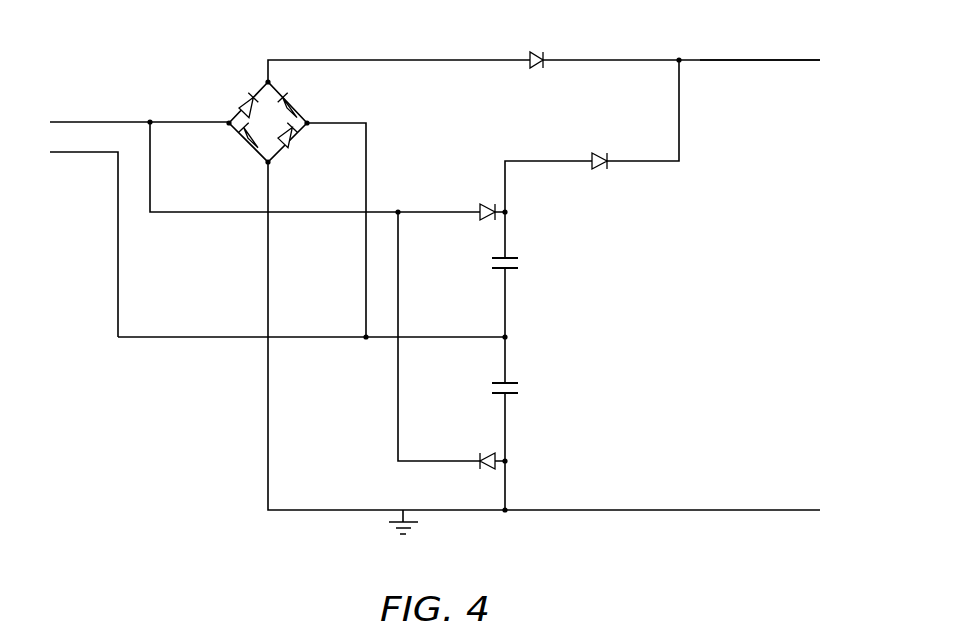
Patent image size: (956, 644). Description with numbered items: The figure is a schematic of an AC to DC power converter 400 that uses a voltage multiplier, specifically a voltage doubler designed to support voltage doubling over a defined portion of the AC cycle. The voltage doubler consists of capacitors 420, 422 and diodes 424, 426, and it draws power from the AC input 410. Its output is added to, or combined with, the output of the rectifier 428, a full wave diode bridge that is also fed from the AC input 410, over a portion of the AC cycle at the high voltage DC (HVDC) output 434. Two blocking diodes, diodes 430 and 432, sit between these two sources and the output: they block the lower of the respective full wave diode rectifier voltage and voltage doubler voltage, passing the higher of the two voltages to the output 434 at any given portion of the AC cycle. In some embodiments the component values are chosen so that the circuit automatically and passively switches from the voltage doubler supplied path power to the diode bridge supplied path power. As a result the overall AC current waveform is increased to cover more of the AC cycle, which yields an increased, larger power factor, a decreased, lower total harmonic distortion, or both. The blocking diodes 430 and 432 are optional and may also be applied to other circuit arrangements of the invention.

The AC to DC power converter 400 is at (178, 38).
The AC input 410 is at (78, 99).
The rectifier 428 is at (330, 105).
The diode 432 is at (530, 57).
The diode 430 is at (592, 157).
The diode 424 is at (479, 208).
The diode 426 is at (479, 457).
The capacitor 420 is at (519, 272).
The capacitor 422 is at (519, 397).
The high voltage DC (HVDC) output 434 is at (797, 63).